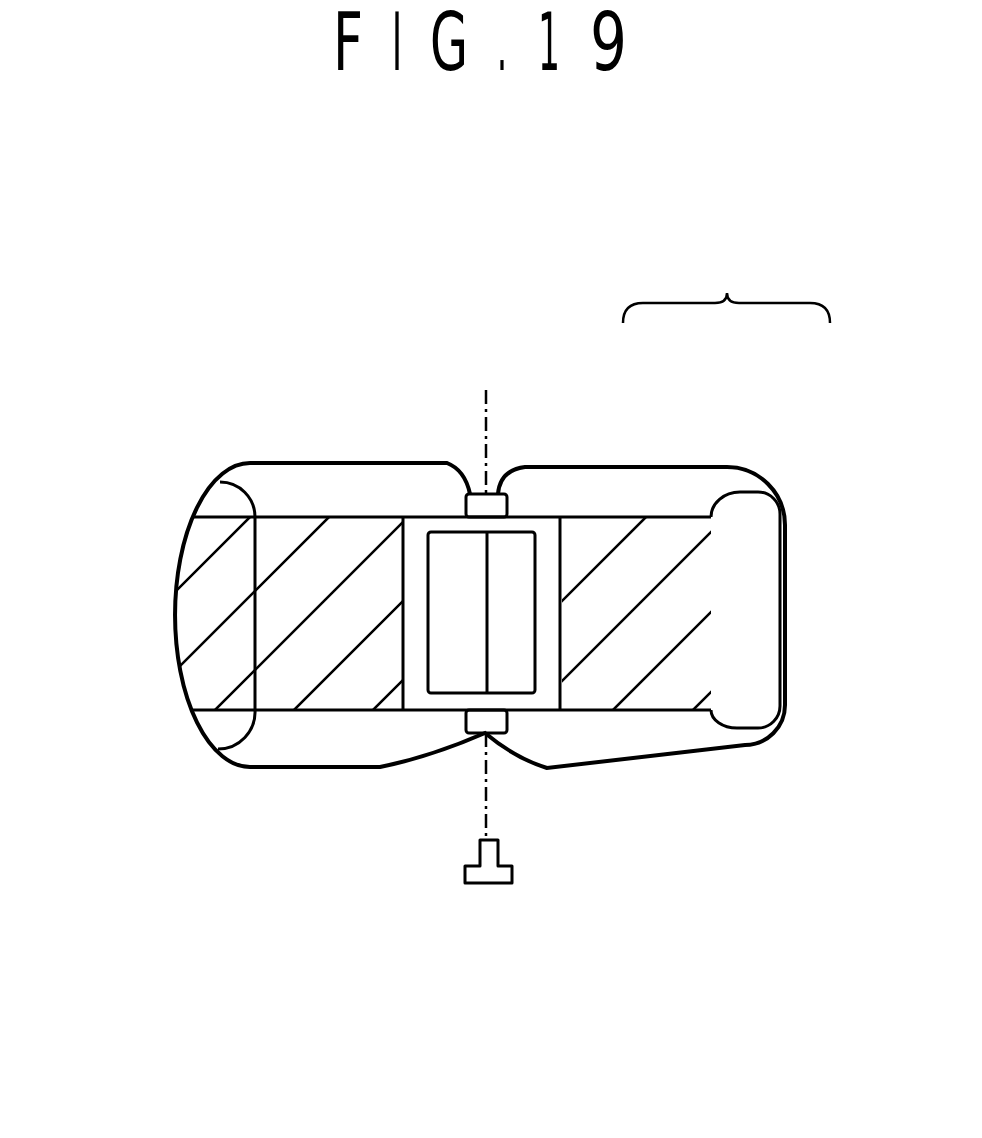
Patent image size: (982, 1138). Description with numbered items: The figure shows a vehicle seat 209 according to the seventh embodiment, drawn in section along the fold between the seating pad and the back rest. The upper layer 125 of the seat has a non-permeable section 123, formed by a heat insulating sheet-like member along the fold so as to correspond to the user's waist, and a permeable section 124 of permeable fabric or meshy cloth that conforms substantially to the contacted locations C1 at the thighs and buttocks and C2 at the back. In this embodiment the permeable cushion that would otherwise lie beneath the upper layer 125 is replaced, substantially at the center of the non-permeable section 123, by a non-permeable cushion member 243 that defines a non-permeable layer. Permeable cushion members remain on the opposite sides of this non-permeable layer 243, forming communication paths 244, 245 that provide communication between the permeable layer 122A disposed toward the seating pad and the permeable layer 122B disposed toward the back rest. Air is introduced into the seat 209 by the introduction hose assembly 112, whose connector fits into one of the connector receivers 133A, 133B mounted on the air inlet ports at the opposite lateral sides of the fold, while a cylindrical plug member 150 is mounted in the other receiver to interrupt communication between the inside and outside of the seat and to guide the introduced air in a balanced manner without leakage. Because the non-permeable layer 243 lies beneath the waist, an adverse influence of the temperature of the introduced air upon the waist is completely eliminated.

The vehicle seat 209 is at (192, 466).
The contacted location (thigh, buttocks) C1 is at (287, 527).
The contacted location (back) C2 is at (697, 573).
The communication path 244 is at (462, 515).
The communication path 245 is at (468, 702).
The introduction hose assembly 112 is at (480, 417).
The connector receiver 133A is at (493, 493).
The connector receiver 133B is at (507, 735).
The upper layer 125 is at (726, 279).
The non-permeable section 123 is at (477, 573).
The permeable section 124 is at (273, 622).
The permeable layer 122A is at (303, 668).
The permeable layer 122B is at (695, 663).
The non-permeable cushion member 243 is at (525, 670).
The plug member 150 is at (490, 885).